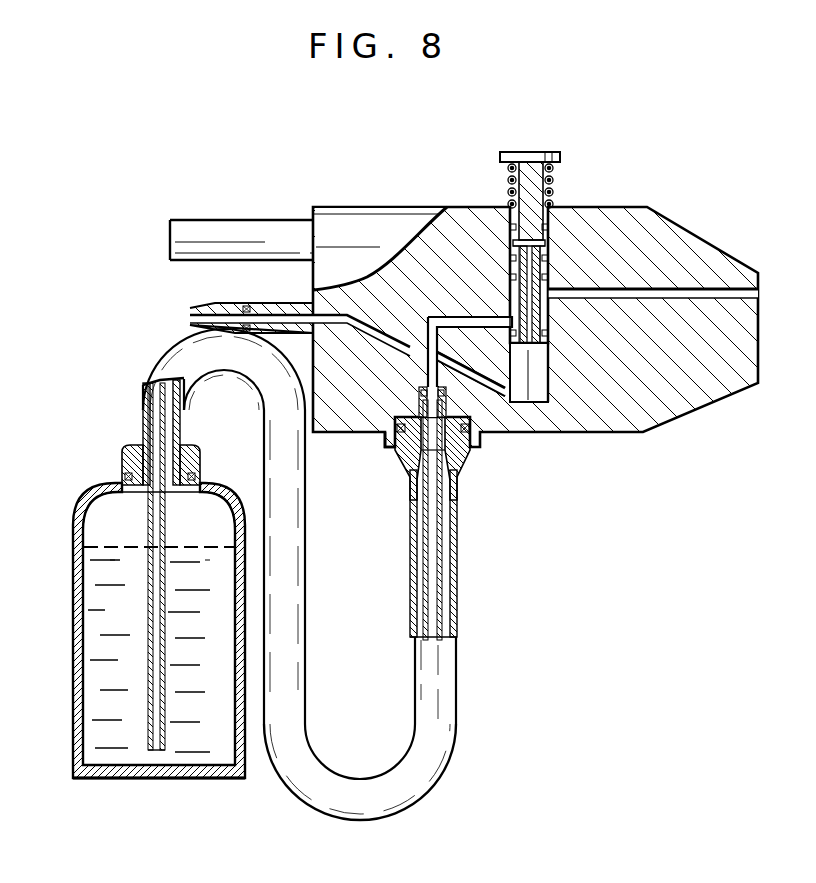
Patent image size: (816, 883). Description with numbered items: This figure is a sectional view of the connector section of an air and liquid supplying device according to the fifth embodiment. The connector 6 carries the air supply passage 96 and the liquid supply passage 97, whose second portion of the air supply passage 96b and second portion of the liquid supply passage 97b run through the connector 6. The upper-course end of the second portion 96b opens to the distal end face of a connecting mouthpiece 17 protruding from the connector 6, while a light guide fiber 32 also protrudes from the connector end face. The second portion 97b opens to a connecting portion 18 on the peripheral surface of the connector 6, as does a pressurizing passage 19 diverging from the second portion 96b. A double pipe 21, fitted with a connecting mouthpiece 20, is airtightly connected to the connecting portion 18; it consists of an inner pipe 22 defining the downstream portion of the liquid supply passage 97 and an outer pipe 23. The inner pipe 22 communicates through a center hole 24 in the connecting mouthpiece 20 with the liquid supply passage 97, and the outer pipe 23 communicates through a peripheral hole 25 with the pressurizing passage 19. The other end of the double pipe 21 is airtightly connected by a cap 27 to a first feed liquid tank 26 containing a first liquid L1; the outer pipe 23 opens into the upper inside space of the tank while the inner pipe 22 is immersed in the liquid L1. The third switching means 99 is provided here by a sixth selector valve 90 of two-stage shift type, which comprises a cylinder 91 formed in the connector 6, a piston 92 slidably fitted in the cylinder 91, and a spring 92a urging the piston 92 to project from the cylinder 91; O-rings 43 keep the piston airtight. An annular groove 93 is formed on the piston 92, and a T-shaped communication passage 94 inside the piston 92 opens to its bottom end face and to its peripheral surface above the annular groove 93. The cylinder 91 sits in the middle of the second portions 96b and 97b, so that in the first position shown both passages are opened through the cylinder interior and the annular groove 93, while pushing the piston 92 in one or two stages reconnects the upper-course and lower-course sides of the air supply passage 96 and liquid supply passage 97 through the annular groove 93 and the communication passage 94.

The connector 6 is at (343, 210).
The connecting mouthpiece 17 is at (267, 305).
The connecting portion 18 is at (385, 445).
The pressurizing passage 19 is at (405, 374).
The connecting mouthpiece 20 is at (460, 470).
The double pipe 21 is at (466, 594).
The inner pipe 22 is at (450, 536).
The outer pipe 23 is at (442, 690).
The center hole 24 is at (470, 425).
The peripheral hole 25 is at (410, 455).
The first feed liquid tank 26 is at (76, 610).
The cap 27 is at (200, 456).
The light guide fiber 32 is at (241, 228).
The O-rings 43 is at (510, 226).
The sixth selector valve 90 is at (562, 244).
The cylinder 91 is at (546, 390).
The piston 92 is at (531, 152).
The spring 92a is at (551, 186).
The annular groove 93 is at (549, 305).
The communication passage 94 is at (550, 263).
The air supply passage 96 is at (340, 288).
The second portion of the air supply passage 96b is at (404, 300).
The liquid supply passage 97 is at (726, 280).
The second portion of the liquid supply passage 97b is at (690, 292).
The third switching means 99 is at (556, 118).
The first liquid L1 is at (115, 546).